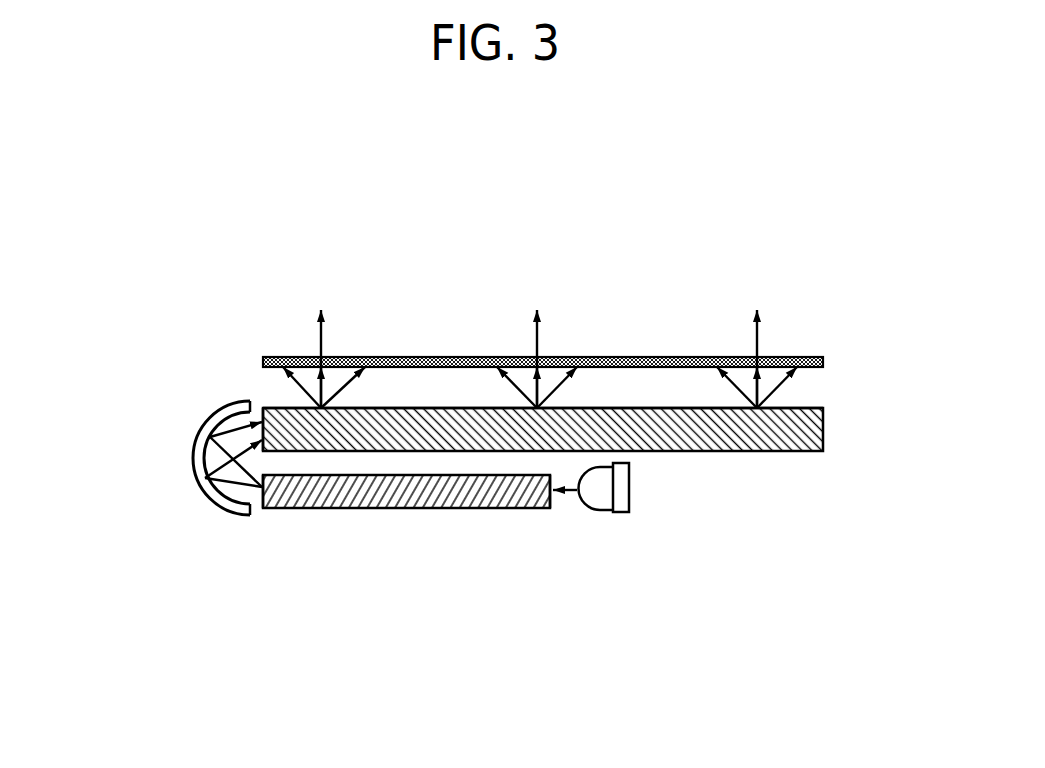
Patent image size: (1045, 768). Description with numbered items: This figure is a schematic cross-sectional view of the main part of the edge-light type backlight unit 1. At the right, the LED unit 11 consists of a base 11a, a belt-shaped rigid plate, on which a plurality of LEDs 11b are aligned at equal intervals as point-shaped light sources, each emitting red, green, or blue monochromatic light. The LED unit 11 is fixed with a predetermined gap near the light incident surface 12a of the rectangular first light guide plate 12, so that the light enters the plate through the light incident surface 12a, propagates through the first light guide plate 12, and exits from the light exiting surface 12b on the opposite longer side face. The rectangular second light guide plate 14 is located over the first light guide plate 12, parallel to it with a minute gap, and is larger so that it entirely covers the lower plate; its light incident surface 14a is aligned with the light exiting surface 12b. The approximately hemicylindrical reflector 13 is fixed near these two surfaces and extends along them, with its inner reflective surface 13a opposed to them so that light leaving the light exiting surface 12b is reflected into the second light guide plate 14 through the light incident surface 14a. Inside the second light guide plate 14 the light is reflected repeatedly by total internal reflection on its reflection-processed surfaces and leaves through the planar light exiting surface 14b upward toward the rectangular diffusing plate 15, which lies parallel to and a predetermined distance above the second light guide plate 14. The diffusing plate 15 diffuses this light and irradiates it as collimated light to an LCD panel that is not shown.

The backlight unit 1 is at (464, 272).
The LED unit 11 is at (664, 598).
The base 11a is at (622, 513).
The LED 11b is at (592, 502).
The first light guide plate 12 is at (423, 497).
The light incident surface 12a is at (552, 508).
The light exiting surface 12b is at (262, 508).
The reflector 13 is at (191, 452).
The reflective surface 13a is at (237, 502).
The second light guide plate 14 is at (760, 451).
The light incident surface 14a is at (263, 410).
The light exiting surface 14b is at (808, 408).
The diffusing plate 15 is at (615, 357).